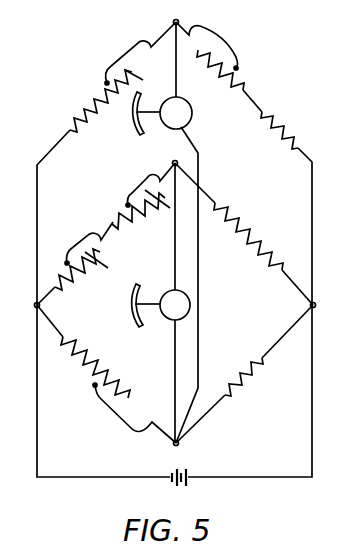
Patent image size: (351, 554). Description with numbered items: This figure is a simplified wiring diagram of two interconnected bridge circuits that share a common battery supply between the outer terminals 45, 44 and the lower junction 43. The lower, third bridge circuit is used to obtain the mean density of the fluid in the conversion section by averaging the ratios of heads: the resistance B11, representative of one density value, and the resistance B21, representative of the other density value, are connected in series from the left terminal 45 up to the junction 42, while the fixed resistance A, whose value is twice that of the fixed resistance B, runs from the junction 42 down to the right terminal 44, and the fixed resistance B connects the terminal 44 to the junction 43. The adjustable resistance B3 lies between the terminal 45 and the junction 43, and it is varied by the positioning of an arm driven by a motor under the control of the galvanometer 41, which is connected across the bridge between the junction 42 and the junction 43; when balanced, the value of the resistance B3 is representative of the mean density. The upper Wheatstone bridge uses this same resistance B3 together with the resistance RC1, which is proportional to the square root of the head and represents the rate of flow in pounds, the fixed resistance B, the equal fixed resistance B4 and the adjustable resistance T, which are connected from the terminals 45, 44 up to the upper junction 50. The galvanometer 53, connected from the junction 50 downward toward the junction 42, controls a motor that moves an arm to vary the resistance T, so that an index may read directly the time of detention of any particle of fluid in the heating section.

The junction terminal 50 is at (173, 15).
The galvanometer 53 is at (189, 100).
The junction terminal 42 is at (171, 156).
The galvanometer 41 is at (170, 320).
The bridge terminal 45 is at (23, 309).
The bridge terminal 44 is at (326, 309).
The junction terminal 43 is at (186, 452).
The resistance RC1 is at (101, 97).
The adjustable resistance T is at (224, 70).
The fixed resistance B4 is at (285, 130).
The fixed resistance A is at (248, 236).
The fixed resistance B is at (244, 379).
The adjustable resistance B3 is at (95, 367).
The resistance B11 is at (72, 267).
The resistance B21 is at (131, 206).